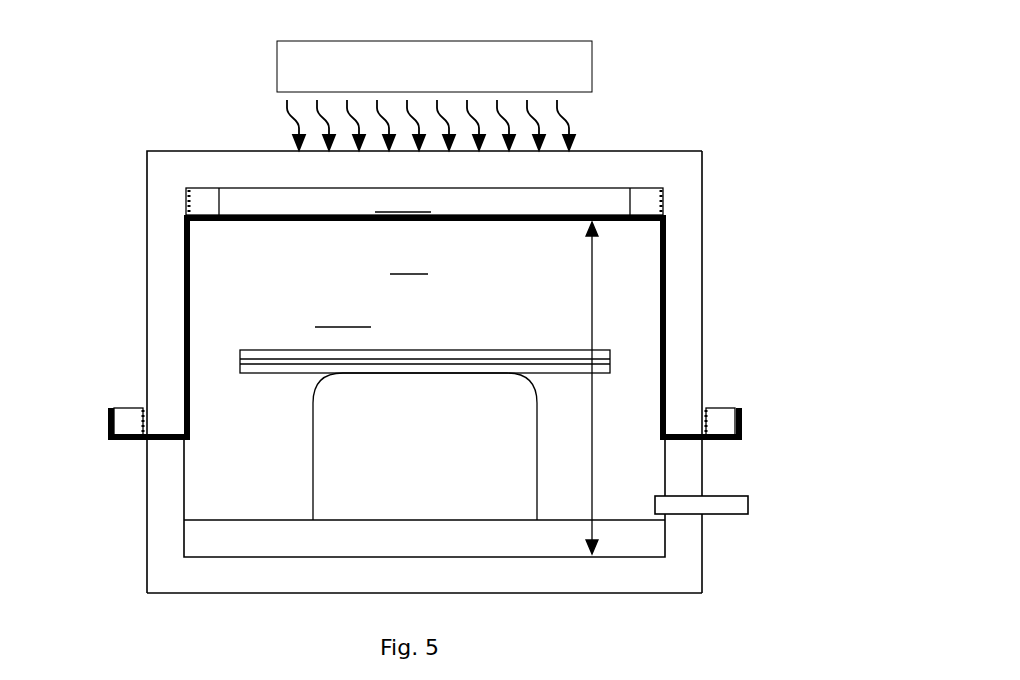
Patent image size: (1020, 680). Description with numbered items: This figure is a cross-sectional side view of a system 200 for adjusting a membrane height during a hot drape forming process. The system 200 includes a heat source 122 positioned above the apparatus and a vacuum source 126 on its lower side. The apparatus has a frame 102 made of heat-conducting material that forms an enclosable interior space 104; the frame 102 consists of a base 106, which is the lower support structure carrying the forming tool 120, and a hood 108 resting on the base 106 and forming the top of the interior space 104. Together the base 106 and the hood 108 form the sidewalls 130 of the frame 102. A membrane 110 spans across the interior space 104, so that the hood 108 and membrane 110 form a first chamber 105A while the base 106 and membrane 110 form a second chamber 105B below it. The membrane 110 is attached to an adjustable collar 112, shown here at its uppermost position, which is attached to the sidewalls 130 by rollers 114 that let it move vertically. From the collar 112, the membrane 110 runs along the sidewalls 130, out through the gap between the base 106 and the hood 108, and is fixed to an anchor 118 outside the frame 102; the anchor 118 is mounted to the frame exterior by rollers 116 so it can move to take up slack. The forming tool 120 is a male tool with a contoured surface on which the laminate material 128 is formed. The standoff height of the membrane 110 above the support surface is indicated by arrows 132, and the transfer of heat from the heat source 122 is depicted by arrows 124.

The system 200 is at (732, 54).
The frame 102 is at (186, 137).
The interior space 104 is at (425, 385).
The first chamber 105A is at (424, 201).
The second chamber 105B is at (425, 338).
The base 106 is at (692, 557).
The hood 108 is at (692, 262).
The membrane 110 is at (291, 215).
The adjustable collar 112 is at (208, 193).
The rollers 114 is at (188, 203).
The rollers 116 is at (143, 405).
The anchor 118 is at (125, 412).
The forming tool 120 is at (212, 533).
The heat source 122 is at (568, 60).
The arrows 124 is at (566, 125).
The vacuum source 126 is at (738, 503).
The laminate material 128 is at (256, 340).
The sidewalls 130 is at (192, 470).
The arrows 132 is at (592, 468).